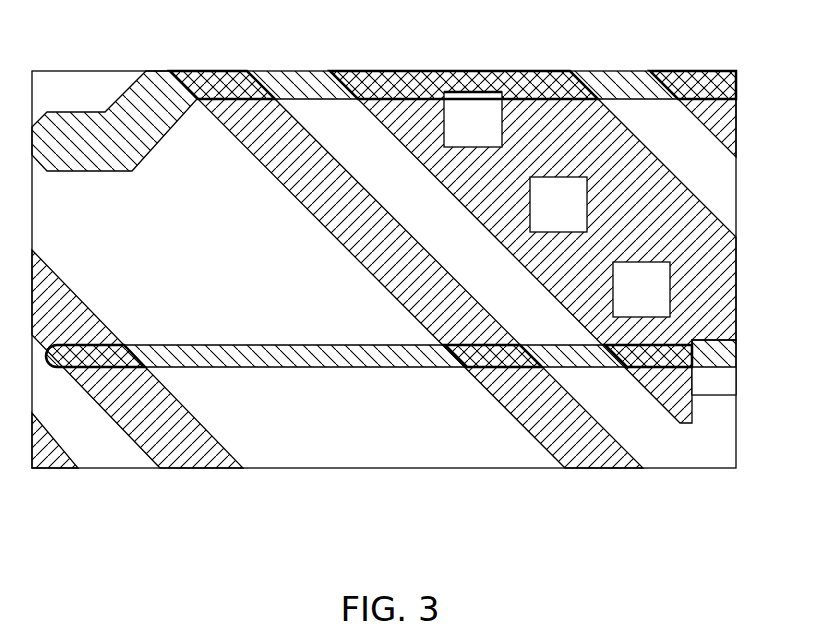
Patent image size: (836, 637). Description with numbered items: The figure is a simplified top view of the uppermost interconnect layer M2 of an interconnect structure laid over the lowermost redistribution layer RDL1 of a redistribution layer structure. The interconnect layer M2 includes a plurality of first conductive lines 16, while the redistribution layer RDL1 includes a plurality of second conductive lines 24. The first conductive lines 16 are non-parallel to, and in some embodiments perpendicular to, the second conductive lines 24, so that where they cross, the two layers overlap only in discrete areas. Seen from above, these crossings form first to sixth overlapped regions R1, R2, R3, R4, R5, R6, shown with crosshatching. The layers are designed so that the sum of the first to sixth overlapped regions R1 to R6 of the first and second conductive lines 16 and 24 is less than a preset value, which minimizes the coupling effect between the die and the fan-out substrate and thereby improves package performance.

The first overlapped region R1 is at (222, 70).
The second overlapped region R2 is at (462, 70).
The third overlapped region R3 is at (692, 70).
The fourth overlapped region R4 is at (113, 368).
The fifth overlapped region R5 is at (485, 368).
The sixth overlapped region R6 is at (665, 368).
The second conductive lines 24 is at (573, 448).
The first conductive lines 16 is at (728, 360).